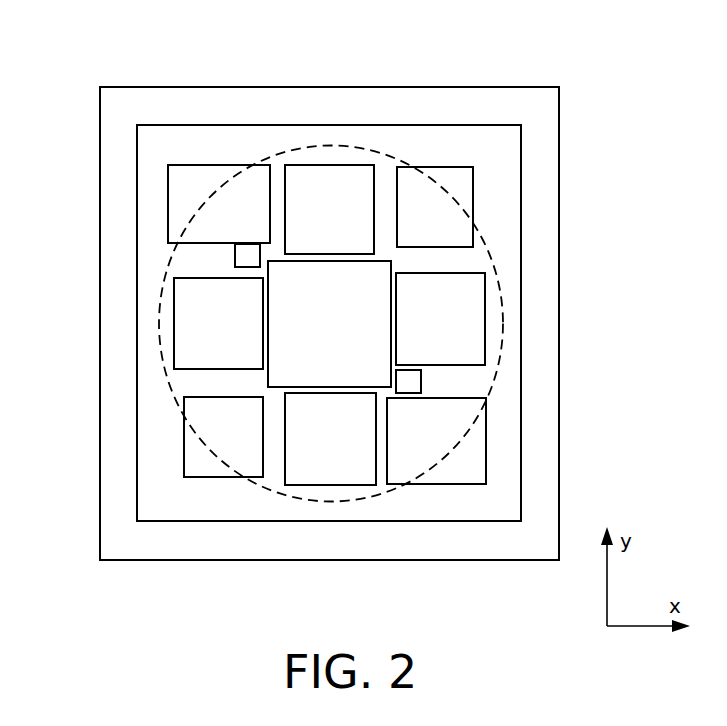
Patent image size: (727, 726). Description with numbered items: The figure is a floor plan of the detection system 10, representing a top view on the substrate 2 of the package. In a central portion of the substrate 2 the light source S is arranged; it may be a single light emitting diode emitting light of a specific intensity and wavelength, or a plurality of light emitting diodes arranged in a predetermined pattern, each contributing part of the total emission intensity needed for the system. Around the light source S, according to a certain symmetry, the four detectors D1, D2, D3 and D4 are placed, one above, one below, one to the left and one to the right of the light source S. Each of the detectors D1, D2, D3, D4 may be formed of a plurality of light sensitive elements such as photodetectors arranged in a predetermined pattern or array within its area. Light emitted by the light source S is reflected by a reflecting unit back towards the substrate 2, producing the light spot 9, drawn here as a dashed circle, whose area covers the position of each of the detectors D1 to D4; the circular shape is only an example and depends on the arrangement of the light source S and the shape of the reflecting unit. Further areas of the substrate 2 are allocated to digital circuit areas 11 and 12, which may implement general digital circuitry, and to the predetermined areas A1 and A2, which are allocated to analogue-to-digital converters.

The detection system 10 is at (540, 56).
The substrate 2 is at (215, 503).
The light spot 9 is at (500, 368).
The digital circuit area 12 is at (191, 184).
The detector D1 is at (345, 180).
The area allocated to analogue-to-digital converter A1 is at (462, 190).
The detector D3 is at (192, 332).
The light source S is at (312, 287).
The detector D4 is at (468, 336).
The area allocated to analogue-to-digital converter A2 is at (197, 455).
The detector D2 is at (355, 465).
The digital circuit area 11 is at (468, 455).